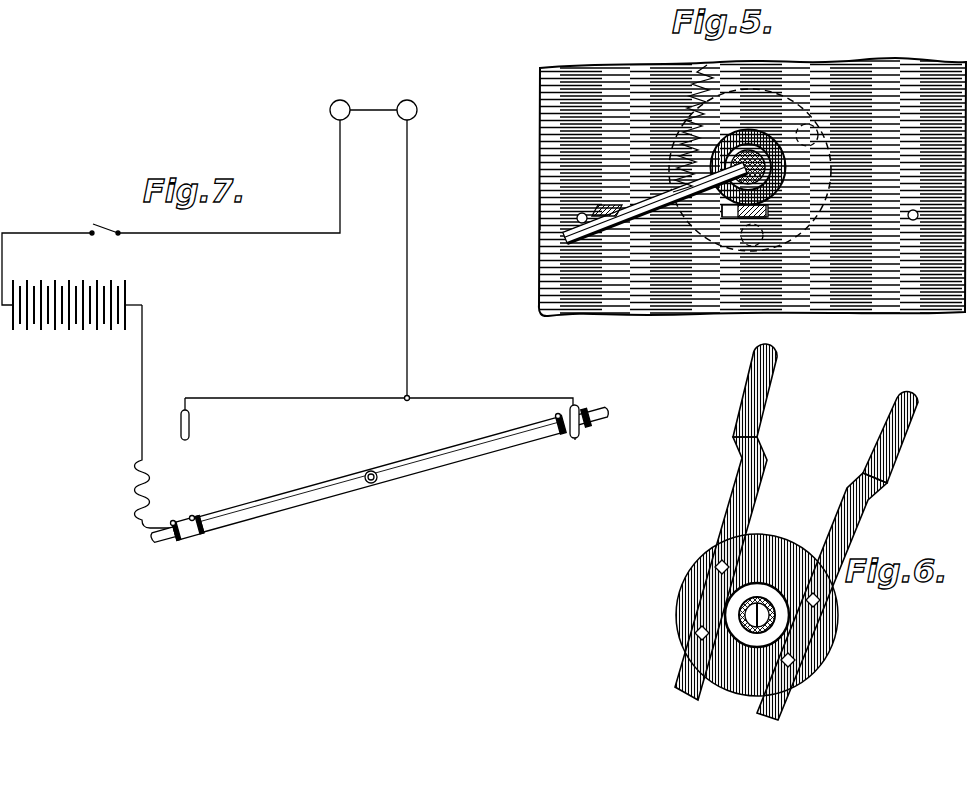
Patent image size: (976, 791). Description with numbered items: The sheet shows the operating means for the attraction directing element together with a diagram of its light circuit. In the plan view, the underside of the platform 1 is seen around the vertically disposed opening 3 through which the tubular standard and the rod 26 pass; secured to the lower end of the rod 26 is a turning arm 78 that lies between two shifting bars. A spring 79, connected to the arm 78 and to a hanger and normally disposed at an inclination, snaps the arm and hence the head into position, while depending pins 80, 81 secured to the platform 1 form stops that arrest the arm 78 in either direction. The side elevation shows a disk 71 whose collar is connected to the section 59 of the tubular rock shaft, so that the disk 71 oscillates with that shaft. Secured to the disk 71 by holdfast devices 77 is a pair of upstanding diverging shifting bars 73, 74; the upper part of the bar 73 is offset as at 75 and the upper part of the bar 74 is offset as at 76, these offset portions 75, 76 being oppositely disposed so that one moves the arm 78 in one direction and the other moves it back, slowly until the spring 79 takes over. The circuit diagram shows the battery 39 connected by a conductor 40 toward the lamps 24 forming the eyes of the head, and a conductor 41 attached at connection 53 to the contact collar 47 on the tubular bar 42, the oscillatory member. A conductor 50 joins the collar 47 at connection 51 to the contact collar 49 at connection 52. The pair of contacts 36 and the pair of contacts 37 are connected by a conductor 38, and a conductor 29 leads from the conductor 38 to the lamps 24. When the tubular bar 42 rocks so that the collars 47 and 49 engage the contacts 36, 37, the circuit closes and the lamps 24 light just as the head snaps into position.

In FIG. 5, the platform 1 is at (871, 73).
In FIG. 5, the vertically disposed opening 3 is at (786, 169).
In FIG. 7, the electric lamps 24 is at (398, 102).
In FIG. 5, the rod 26 is at (722, 210).
In FIG. 7, the conductor 29 is at (407, 296).
In FIG. 7, the pair of contacts 36 is at (189, 437).
In FIG. 7, the pair of contacts 37 is at (583, 410).
In FIG. 7, the conductor 38 is at (473, 397).
In FIG. 7, the battery 39 is at (125, 293).
In FIG. 7, the conductor 40 is at (272, 234).
In FIG. 7, the conductor 41 is at (141, 414).
In FIG. 7, the tubular bar 42 is at (452, 471).
In FIG. 7, the contact collar 47 is at (190, 537).
In FIG. 7, the contact collar 49 is at (580, 437).
In FIG. 7, the conductor 50 is at (283, 493).
In FIG. 7, the connection 51 is at (195, 516).
In FIG. 7, the connection 52 is at (556, 415).
In FIG. 7, the connection 53 is at (175, 520).
In FIG. 6, the section of tubular rock shaft 59 is at (757, 640).
In FIG. 6, the disk 71 is at (777, 540).
In FIG. 6, the shifting bar 73 is at (737, 513).
In FIG. 6, the shifting bar 74 is at (837, 547).
In FIG. 5, the offset portion 75 is at (770, 214).
In FIG. 6, the offset portion 75 is at (733, 425).
In FIG. 5, the offset portion 76 is at (541, 212).
In FIG. 6, the offset portion 76 is at (890, 463).
In FIG. 6, the holdfast devices 77 is at (700, 630).
In FIG. 5, the turning arm 78 is at (680, 208).
In FIG. 5, the spring 79 is at (688, 78).
In FIG. 5, the stop pin 80 is at (578, 220).
In FIG. 5, the stop pin 81 is at (914, 221).